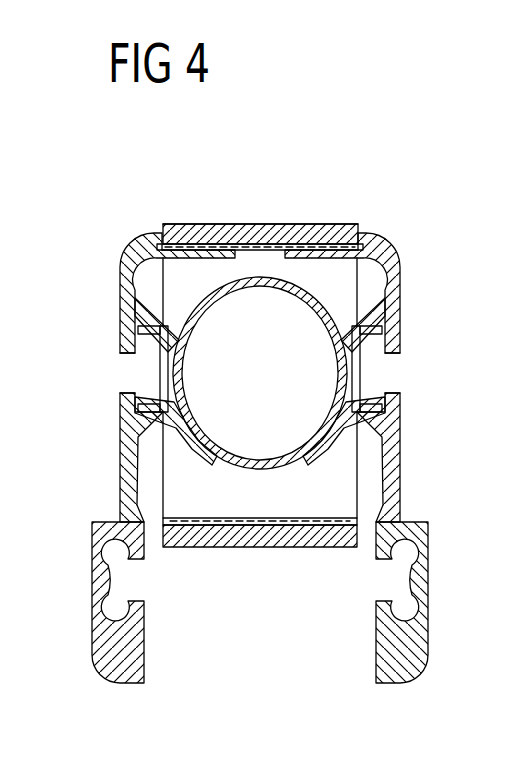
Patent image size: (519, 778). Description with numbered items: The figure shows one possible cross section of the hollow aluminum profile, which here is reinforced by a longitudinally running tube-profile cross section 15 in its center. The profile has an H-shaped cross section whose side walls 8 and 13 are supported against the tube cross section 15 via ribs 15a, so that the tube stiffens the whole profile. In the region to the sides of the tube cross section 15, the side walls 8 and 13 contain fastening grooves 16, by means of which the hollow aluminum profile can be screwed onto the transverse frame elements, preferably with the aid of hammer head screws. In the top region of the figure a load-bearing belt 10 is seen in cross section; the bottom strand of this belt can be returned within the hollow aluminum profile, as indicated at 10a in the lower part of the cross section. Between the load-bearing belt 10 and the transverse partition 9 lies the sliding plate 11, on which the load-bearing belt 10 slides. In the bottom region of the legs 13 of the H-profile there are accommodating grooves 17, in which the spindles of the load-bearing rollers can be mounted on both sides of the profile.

The side wall 8 is at (402, 292).
The transverse partition 9 is at (333, 223).
The load-bearing belt 10 is at (208, 223).
The bottom strand of the load-bearing belt 10a is at (258, 548).
The sliding plate 11 is at (272, 223).
The leg 13 is at (402, 486).
The tube-profile cross section 15 is at (271, 286).
The rib 15a is at (137, 322).
The fastening groove 16 is at (136, 372).
The accommodating groove 17 is at (126, 577).